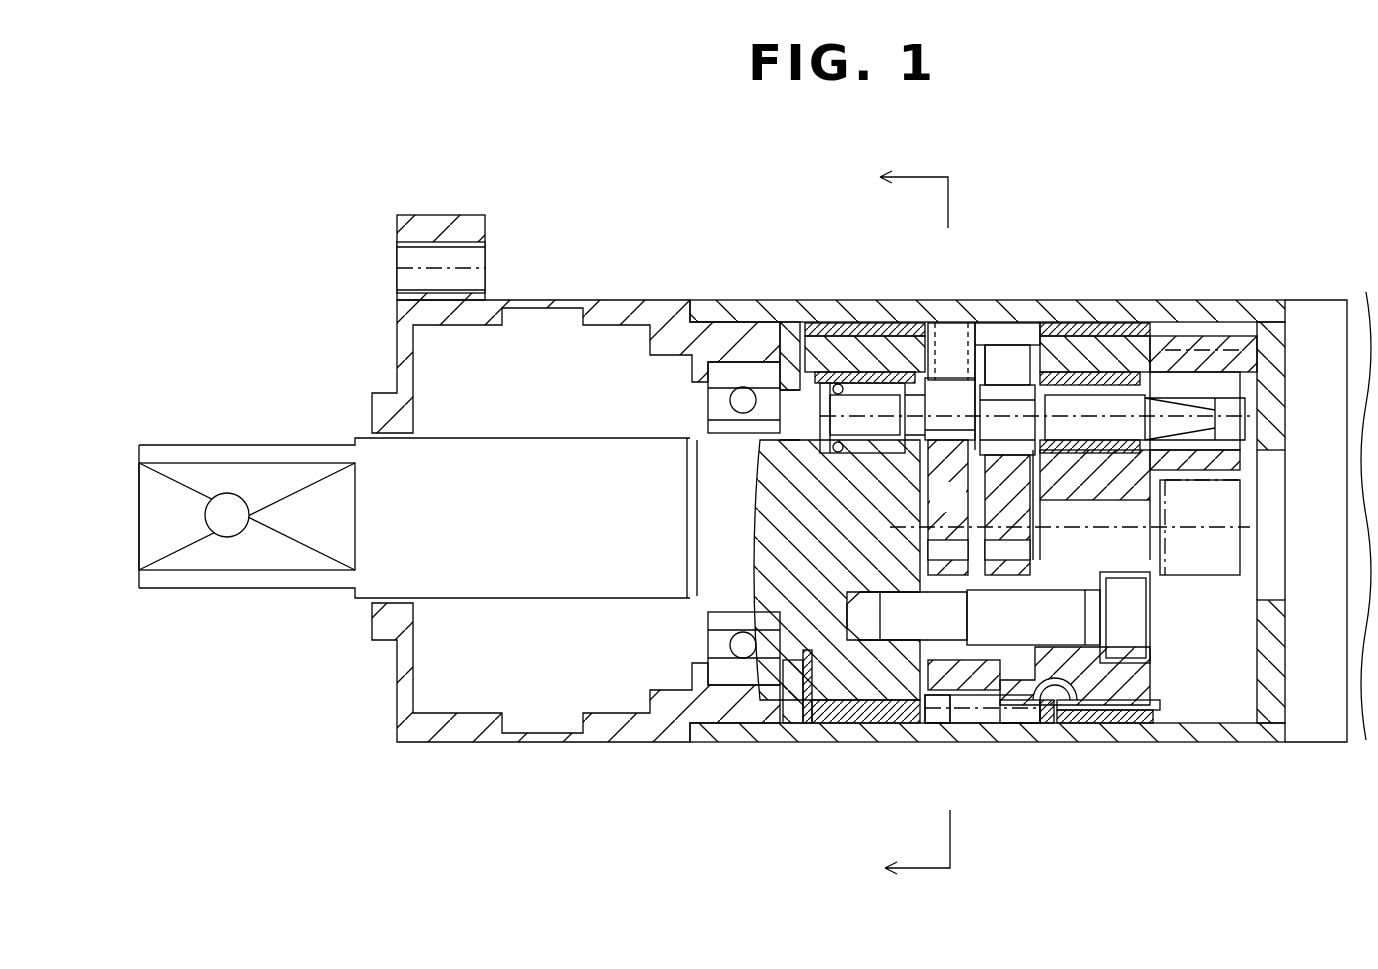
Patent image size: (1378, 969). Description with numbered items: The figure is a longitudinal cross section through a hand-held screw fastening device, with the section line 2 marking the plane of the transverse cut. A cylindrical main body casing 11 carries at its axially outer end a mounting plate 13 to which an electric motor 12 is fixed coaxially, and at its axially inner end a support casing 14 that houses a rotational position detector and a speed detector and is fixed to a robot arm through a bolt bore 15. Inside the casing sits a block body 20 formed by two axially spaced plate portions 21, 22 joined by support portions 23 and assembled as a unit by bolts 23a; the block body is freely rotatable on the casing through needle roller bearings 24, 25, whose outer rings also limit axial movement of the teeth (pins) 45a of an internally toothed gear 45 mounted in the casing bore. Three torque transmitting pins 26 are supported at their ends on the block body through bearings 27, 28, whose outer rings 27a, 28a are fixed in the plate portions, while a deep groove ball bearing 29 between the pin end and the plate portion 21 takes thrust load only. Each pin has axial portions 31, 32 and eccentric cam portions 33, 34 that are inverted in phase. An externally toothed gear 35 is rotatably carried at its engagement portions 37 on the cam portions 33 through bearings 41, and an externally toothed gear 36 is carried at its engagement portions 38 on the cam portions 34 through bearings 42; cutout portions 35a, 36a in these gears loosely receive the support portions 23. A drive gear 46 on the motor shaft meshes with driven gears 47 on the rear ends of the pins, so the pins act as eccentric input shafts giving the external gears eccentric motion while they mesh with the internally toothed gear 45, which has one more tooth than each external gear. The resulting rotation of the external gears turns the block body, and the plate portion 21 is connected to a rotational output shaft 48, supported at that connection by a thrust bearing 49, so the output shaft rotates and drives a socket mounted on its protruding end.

The section line 2- 2 is at (898, 525).
The main body casing 11 is at (800, 320).
The electric motor 12 is at (1330, 745).
The mounting plate 13 is at (1266, 745).
The support casing 14 is at (608, 745).
The bolt bore 15 is at (485, 258).
The block body 20 is at (1155, 690).
The plate portion 21 is at (810, 745).
The plate portion 22 is at (1088, 745).
The support portions 23 is at (1050, 745).
The bolts 23a is at (1140, 632).
The needle roller bearing 24 is at (870, 745).
The needle roller bearing 25 is at (1125, 745).
The torque transmitting pin 26 is at (1240, 412).
The bearing 27 is at (893, 322).
The outer ring 27a is at (860, 345).
The bearing 28 is at (1132, 323).
The outer ring 28a is at (1095, 345).
The deep groove ball bearing 29 is at (830, 323).
The axial portion 31 is at (872, 418).
The axial portion 32 is at (1095, 417).
The eccentric cam portion 33 is at (950, 409).
The eccentric cam portion 34 is at (1007, 480).
The externally toothed gear 35 is at (948, 323).
The cutout portions 35a is at (985, 590).
The externally toothed gear 36 is at (1012, 345).
The cutout portions 36a is at (1045, 745).
The engagement portions 37 is at (948, 507).
The engagement portions 38 is at (1050, 470).
The bearings 41 is at (980, 323).
The bearings 42 is at (1052, 345).
The internally toothed gear 45 is at (1005, 745).
The teeth (pins) 45a is at (960, 745).
The drive gear 46 is at (1188, 572).
The driven gears 47 is at (1190, 322).
The rotational output shaft 48 is at (556, 536).
The bearing 49 is at (708, 396).